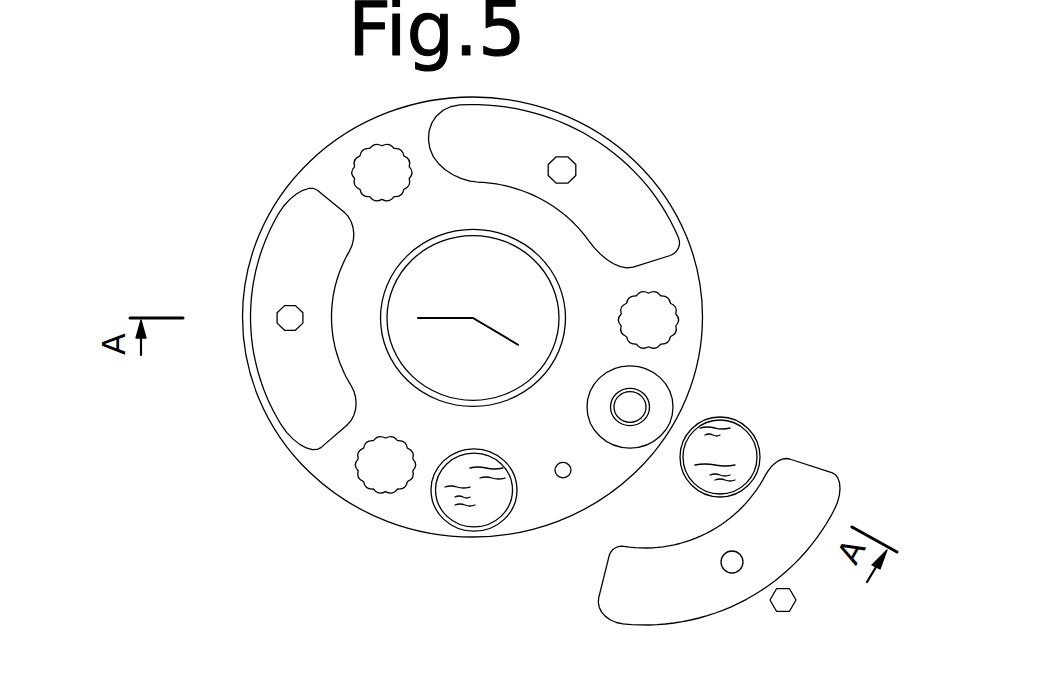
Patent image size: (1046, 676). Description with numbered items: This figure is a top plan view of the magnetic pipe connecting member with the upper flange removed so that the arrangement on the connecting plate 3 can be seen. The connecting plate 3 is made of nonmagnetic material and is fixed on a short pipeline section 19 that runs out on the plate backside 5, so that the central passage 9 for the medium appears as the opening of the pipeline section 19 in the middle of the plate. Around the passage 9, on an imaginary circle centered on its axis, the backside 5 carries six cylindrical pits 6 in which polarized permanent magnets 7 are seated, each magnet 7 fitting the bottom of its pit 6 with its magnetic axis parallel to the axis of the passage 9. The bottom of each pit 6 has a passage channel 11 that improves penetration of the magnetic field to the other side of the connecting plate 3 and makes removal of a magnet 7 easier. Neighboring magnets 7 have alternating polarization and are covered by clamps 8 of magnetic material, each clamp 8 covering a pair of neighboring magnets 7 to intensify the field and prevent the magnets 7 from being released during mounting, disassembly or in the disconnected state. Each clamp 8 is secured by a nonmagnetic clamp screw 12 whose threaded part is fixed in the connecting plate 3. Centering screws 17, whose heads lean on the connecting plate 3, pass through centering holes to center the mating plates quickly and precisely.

The connecting plate 3 is at (700, 268).
The backside 5 is at (694, 284).
The pit 6 is at (650, 378).
The magnet 7 is at (484, 507).
The clamp 8 is at (290, 380).
The passage 9 is at (483, 378).
The passage channel 11 is at (638, 401).
The clamp screw 12 is at (292, 317).
The centering screw 17 is at (380, 175).
The pipeline section 19 is at (558, 298).